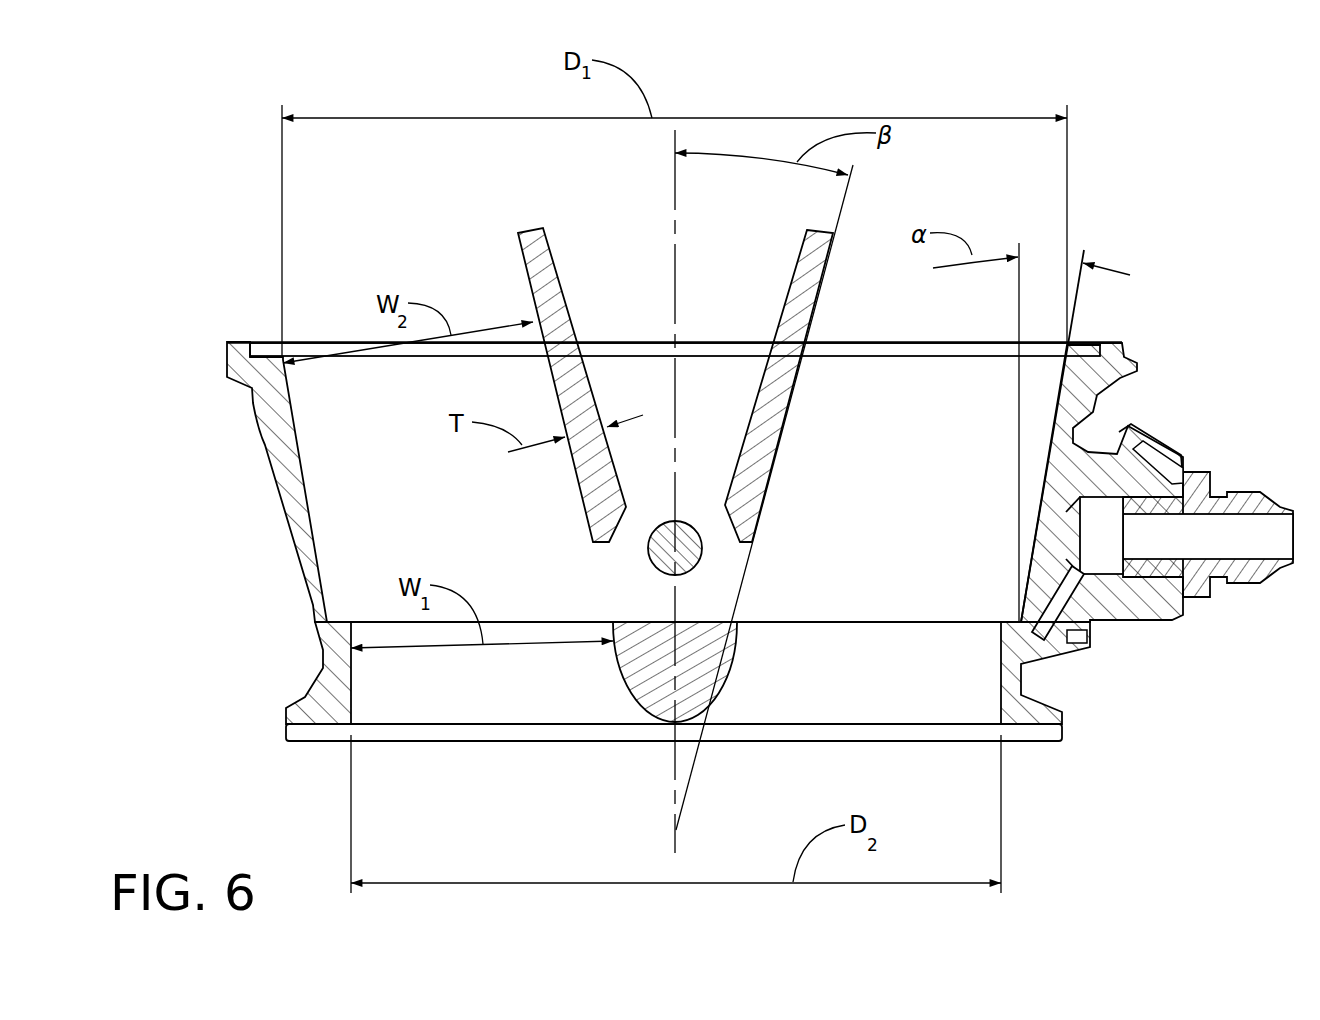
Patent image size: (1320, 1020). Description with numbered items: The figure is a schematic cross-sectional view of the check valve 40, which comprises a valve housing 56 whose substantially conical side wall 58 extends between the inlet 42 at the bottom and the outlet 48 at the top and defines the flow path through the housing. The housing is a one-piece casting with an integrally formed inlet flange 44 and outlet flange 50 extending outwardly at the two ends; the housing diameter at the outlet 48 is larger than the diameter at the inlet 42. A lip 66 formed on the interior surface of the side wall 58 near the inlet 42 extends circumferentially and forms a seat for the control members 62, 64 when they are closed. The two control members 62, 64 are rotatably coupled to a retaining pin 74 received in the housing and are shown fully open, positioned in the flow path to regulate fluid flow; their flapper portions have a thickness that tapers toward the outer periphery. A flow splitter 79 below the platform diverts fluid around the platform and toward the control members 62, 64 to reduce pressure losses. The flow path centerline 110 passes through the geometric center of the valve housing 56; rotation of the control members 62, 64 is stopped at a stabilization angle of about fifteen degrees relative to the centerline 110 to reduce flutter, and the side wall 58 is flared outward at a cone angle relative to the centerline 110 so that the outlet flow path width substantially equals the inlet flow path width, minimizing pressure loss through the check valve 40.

The check valve 40 is at (330, 72).
The inlet 42 is at (402, 755).
The inlet flange 44 is at (1062, 738).
The outlet 48 is at (318, 318).
The outlet flange 50 is at (238, 342).
The valve housing 56 is at (1137, 348).
The side wall 58 is at (286, 499).
The control member 62 is at (515, 248).
The control member 64 is at (823, 278).
The lip 66 is at (1013, 612).
The retaining pin 74 is at (653, 567).
The flow splitter 79 is at (623, 678).
The centerline 110 is at (672, 207).